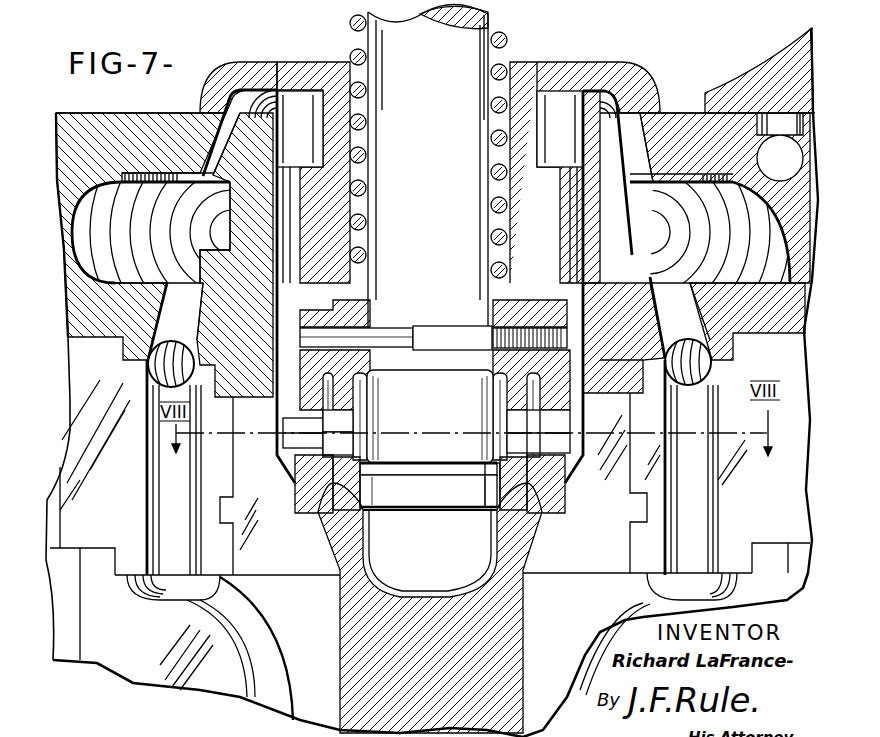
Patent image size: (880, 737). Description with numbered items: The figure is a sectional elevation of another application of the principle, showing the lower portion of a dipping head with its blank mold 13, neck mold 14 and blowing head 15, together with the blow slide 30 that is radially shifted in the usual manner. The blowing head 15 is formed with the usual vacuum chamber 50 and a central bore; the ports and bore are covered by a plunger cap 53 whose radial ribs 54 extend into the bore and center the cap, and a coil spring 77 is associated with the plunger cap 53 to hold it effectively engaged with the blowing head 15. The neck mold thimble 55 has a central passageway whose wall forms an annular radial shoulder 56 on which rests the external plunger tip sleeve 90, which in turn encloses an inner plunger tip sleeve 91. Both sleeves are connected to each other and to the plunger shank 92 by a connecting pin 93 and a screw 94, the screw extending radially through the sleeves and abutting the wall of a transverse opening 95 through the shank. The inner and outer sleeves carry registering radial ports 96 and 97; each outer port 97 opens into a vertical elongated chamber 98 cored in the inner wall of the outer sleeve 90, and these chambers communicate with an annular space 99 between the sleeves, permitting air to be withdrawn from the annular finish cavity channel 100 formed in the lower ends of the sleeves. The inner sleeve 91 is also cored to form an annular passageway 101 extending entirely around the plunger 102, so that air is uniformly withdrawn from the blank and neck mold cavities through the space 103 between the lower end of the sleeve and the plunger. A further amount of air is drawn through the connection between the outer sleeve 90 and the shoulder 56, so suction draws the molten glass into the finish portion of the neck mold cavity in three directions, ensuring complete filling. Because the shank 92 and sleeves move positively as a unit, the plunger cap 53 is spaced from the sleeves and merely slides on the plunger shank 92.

The blank mold 13 is at (227, 690).
The neck mold 14 is at (77, 447).
The blowing head 15 is at (673, 113).
The blow slide 30 is at (777, 58).
The vacuum chamber 50 is at (693, 250).
The plunger cap 53 is at (620, 66).
The radial ribs 54 is at (573, 162).
The neck mold thimble 55 is at (320, 585).
The annular radial shoulder 56 is at (550, 510).
The coil spring 77 is at (508, 41).
The external plunger tip sleeve 90 is at (311, 505).
The inner plunger tip sleeve 91 is at (332, 483).
The plunger shank 92 is at (463, 228).
The connecting pin 93 is at (386, 333).
The screw 94 is at (538, 328).
The transverse opening 95 is at (462, 332).
The radial ports 96 is at (343, 423).
The radial ports 97 is at (300, 440).
The vertical elongated chamber 98 is at (330, 442).
The annular space 99 is at (340, 470).
The annular finish cavity channel 100 is at (343, 488).
The annular passageway 101 is at (360, 397).
The plunger 102 is at (453, 430).
The space 103 is at (497, 475).